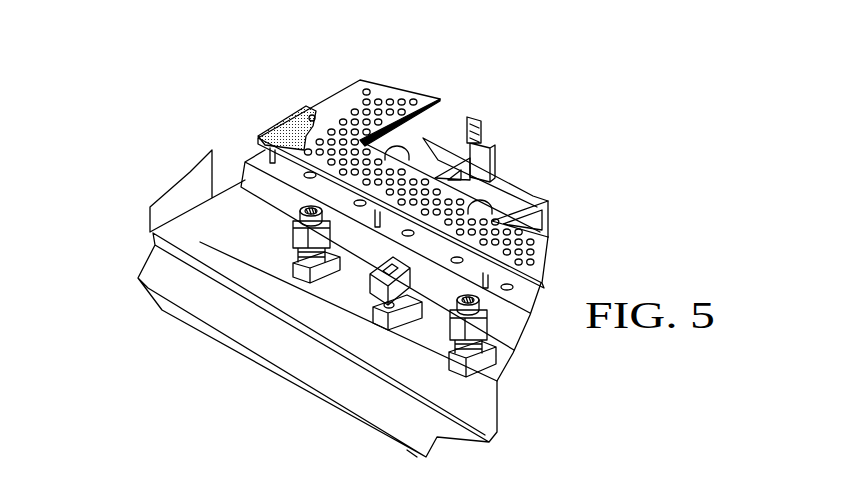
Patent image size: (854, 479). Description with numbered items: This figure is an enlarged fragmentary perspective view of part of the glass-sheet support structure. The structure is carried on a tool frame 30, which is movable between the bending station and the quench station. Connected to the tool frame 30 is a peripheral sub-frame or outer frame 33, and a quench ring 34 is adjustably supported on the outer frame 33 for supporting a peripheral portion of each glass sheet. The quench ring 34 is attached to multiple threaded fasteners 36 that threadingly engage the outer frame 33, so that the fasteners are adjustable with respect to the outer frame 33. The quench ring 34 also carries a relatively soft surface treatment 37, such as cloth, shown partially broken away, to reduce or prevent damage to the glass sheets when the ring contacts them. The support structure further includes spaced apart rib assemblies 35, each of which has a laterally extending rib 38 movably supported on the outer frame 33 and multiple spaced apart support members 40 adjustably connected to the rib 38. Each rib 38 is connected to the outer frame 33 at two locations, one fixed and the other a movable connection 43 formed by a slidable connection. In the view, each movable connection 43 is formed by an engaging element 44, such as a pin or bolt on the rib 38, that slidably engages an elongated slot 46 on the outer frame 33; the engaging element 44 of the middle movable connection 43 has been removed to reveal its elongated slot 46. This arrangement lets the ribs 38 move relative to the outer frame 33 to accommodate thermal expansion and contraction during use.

The tool frame 30 is at (160, 273).
The outer frame 33 is at (212, 150).
The quench ring 34 is at (327, 95).
The rib assembly 35 is at (545, 197).
The threaded fastener 36 is at (246, 170).
The surface treatment 37 is at (310, 115).
The rib 38 is at (315, 295).
The support member 40 is at (418, 148).
The movable connection 43 is at (278, 254).
The engaging element 44 is at (302, 211).
The elongated slot 46 is at (372, 288).